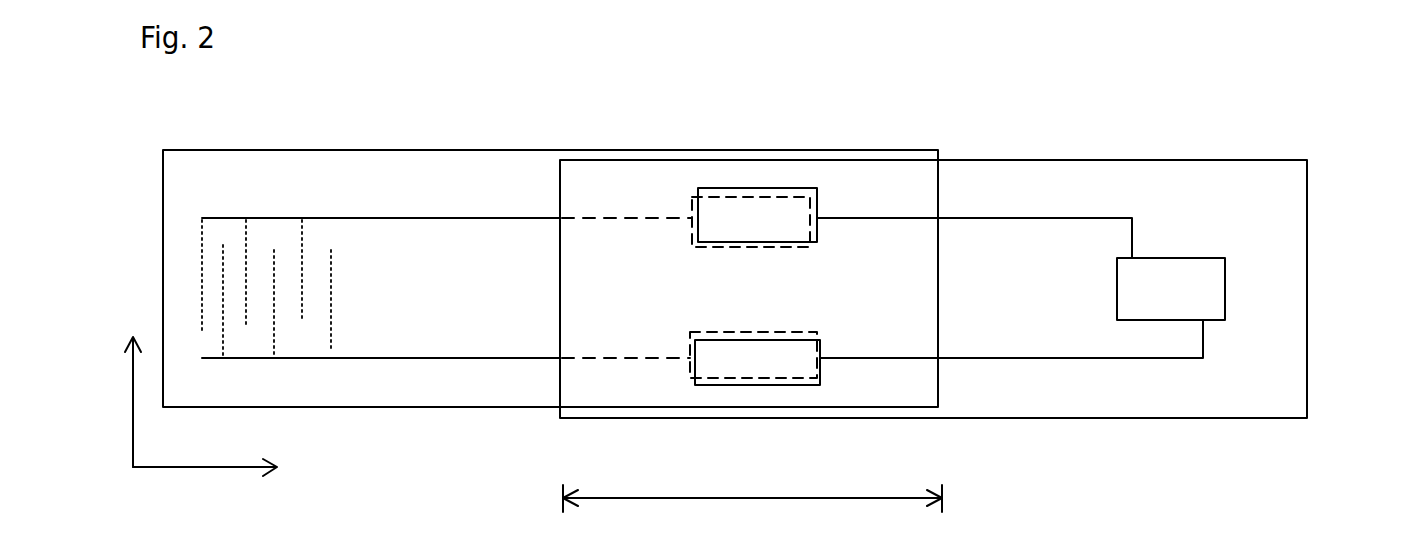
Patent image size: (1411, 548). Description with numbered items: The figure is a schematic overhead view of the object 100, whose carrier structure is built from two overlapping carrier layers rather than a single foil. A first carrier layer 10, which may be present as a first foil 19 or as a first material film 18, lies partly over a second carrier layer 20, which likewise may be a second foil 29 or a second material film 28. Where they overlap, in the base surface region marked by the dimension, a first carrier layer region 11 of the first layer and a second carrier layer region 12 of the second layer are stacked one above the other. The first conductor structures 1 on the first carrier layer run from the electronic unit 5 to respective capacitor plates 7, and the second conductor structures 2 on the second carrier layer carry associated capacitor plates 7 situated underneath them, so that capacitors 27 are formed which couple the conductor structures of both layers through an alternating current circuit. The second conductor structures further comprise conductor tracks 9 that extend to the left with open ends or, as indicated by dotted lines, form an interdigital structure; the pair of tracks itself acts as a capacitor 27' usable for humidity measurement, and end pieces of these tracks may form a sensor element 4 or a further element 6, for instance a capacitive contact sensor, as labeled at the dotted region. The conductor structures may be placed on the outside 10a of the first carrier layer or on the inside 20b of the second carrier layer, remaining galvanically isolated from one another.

The object 100 is at (827, 97).
The first conductor structure 1 is at (420, 223).
The second conductor structure 2 is at (702, 289).
The sensor element 4 is at (346, 216).
The electronic unit 5 is at (1215, 292).
The graduation 6 is at (346, 216).
The capacitor plate 7 is at (805, 286).
The conductor track 9 is at (702, 218).
The first carrier layer 10 is at (978, 287).
The outside 10a is at (978, 287).
The first carrier layer region 11 is at (647, 157).
The second carrier layer region 12 is at (978, 287).
The first material film 18 is at (978, 287).
The first foil 19 is at (978, 287).
The second carrier layer 20 is at (780, 288).
The inside 20b is at (550, 312).
The capacitor 27 is at (805, 286).
The capacitor 27' is at (346, 216).
The second material film 28 is at (550, 312).
The second foil 29 is at (350, 393).